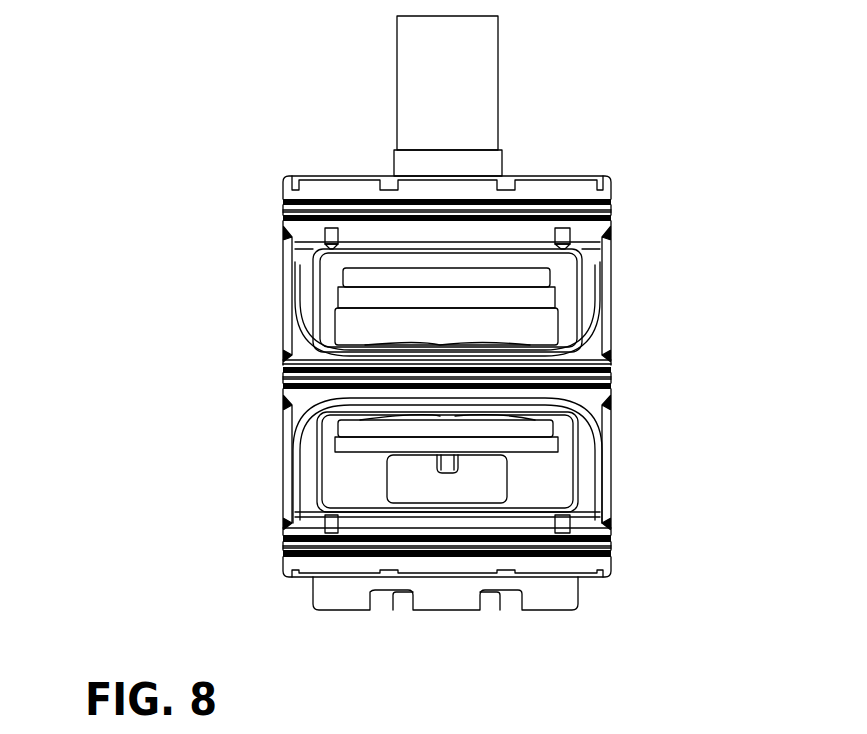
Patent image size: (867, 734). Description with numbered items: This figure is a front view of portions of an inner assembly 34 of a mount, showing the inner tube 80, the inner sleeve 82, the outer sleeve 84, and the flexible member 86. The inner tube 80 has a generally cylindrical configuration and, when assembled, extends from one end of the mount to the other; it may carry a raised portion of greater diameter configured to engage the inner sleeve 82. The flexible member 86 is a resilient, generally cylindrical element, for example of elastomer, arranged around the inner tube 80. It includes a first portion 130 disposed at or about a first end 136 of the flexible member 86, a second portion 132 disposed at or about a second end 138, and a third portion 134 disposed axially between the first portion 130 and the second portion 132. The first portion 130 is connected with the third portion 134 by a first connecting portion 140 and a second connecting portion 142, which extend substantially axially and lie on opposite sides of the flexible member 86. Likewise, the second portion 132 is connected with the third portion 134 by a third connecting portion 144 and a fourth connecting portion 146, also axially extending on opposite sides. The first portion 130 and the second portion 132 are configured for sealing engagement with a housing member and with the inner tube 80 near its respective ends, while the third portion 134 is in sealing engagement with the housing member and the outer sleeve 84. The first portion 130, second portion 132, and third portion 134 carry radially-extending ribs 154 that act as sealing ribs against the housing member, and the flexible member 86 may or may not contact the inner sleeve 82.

The inner assembly 34 is at (290, 66).
The inner tube 80 is at (468, 83).
The flexible member 86 is at (331, 184).
The first portion 130 is at (608, 190).
The radially-extending ribs 154 is at (612, 220).
The first end 136 is at (245, 192).
The first connecting portion 140 is at (287, 277).
The second connecting portion 142 is at (612, 290).
The third portion 134 is at (305, 360).
The second end 138 is at (260, 562).
The third connecting portion 144 is at (293, 430).
The fourth connecting portion 146 is at (608, 502).
The outer sleeve 84 is at (533, 427).
The inner sleeve 82 is at (333, 458).
The second portion 132 is at (582, 567).